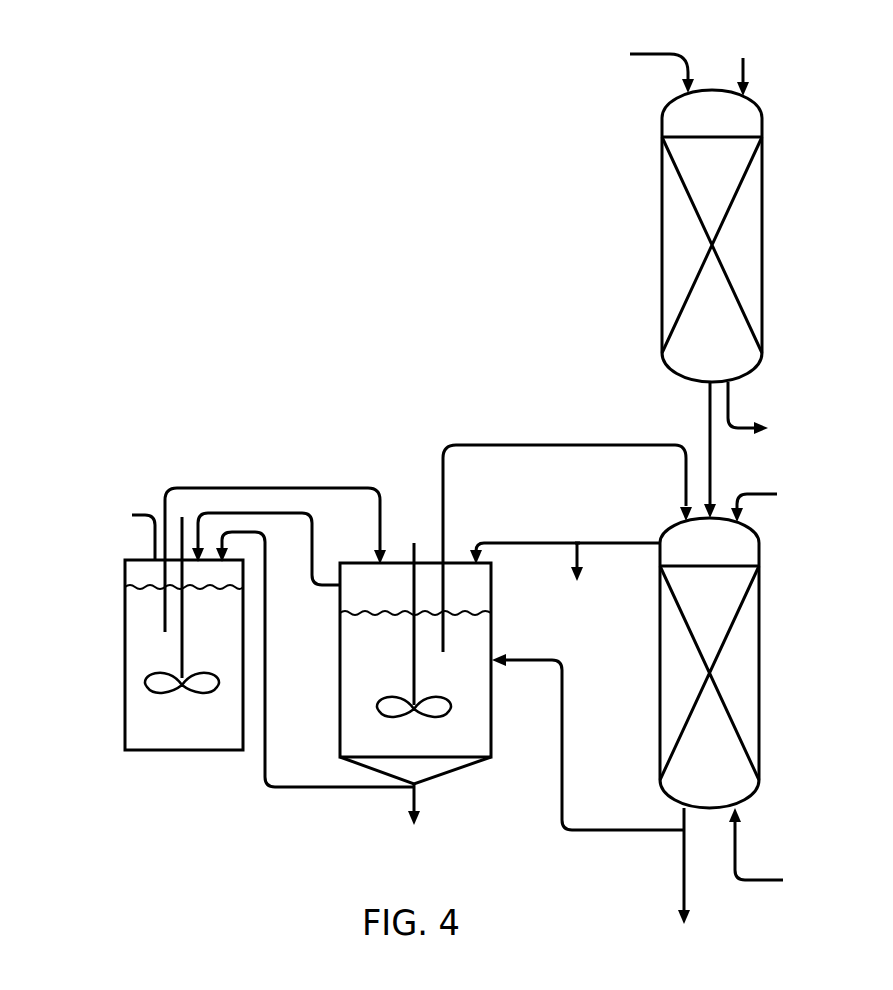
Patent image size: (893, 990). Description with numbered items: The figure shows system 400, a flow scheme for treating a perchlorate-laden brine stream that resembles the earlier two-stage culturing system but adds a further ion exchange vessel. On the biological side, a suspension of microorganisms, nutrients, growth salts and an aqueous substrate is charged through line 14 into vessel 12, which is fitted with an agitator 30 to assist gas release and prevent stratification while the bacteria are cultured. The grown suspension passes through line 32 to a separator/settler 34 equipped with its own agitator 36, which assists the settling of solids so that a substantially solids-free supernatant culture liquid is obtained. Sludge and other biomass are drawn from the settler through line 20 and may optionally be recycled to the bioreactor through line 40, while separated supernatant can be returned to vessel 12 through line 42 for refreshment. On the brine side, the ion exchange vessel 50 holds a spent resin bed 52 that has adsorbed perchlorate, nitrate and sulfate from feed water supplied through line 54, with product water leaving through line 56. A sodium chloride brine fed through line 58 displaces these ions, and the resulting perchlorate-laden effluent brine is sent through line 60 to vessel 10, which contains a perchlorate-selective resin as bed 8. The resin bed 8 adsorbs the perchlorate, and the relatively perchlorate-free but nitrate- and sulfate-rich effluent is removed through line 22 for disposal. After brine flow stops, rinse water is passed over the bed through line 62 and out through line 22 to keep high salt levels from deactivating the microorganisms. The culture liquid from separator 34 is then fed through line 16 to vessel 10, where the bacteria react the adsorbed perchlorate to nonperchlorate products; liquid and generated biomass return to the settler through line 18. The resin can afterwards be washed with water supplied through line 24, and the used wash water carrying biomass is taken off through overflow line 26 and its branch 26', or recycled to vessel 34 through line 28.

The system 400 is at (222, 848).
The vessel 12 is at (132, 718).
The line 14 is at (150, 530).
The agitator 30 is at (177, 648).
The line 32 is at (278, 488).
The line 42 is at (316, 530).
The line 40 is at (268, 585).
The separator/settler 34 is at (338, 648).
The agitator 36 is at (410, 672).
The line 20 is at (425, 803).
The line 16 is at (548, 445).
The line 28 is at (500, 543).
The line 26 is at (617, 524).
The line 26' is at (604, 562).
The line 18 is at (562, 732).
The vessel 10 is at (750, 552).
The resin bed 8 is at (752, 648).
The line 22 is at (683, 872).
The line 24 is at (740, 876).
The ion exchange vessel 50 is at (755, 120).
The resin bed 52 is at (755, 220).
The line 54 is at (752, 62).
The line 58 is at (670, 52).
The line 56 is at (732, 420).
The line 60 is at (712, 463).
The line 62 is at (771, 505).